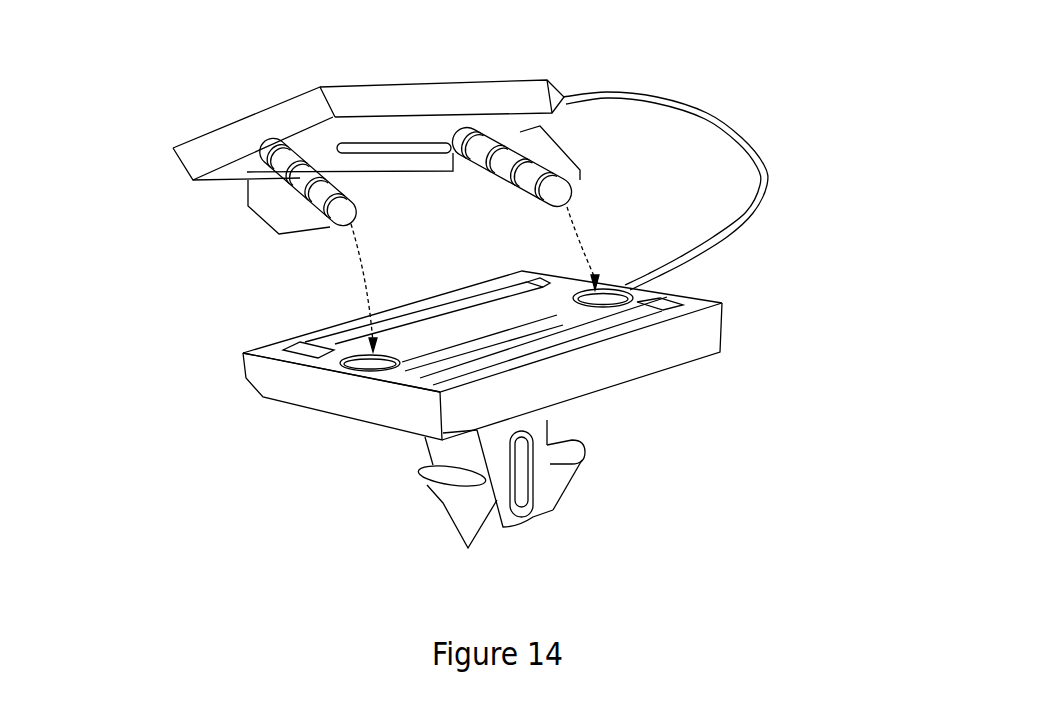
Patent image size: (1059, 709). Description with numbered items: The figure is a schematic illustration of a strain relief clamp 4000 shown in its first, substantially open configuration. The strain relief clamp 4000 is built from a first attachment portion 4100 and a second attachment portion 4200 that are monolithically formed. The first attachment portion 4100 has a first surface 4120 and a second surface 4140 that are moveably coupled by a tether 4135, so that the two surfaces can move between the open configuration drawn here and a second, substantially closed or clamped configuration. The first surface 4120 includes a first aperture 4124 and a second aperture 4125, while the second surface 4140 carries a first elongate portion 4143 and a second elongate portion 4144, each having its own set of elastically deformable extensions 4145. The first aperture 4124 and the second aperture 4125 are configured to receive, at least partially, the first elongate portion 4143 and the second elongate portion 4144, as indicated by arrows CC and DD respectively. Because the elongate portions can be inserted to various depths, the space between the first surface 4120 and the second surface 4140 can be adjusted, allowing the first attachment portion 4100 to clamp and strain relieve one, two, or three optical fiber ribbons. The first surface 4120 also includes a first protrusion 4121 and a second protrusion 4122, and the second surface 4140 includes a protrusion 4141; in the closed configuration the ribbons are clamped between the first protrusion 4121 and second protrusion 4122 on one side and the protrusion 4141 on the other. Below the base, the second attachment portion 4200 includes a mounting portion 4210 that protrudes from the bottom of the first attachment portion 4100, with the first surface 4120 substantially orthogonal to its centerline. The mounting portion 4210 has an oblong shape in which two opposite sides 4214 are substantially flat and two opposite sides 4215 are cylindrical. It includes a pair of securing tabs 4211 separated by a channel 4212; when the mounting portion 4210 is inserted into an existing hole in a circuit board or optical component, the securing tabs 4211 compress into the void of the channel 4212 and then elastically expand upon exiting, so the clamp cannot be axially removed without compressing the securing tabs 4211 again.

The strain relief clamp 4000 is at (388, 58).
The first attachment portion 4100 is at (225, 382).
The first surface 4120 is at (527, 318).
The first protrusion 4121 is at (423, 388).
The second protrusion 4122 is at (333, 348).
The first aperture 4124 is at (358, 370).
The second aperture 4125 is at (620, 308).
The tether 4135 is at (770, 153).
The second surface 4140 is at (337, 115).
The protrusion 4141 is at (337, 145).
The first elongate portion 4143 is at (278, 233).
The second elongate portion 4144 is at (562, 190).
The elastically deformable extensions 4145 is at (247, 217).
The second attachment portion 4200 is at (600, 464).
The mounting portion 4210 is at (417, 473).
The securing tabs 4211 is at (550, 470).
The channel 4212 is at (523, 485).
The flat sides 4214 is at (500, 487).
The cylindrical sides 4215 is at (470, 455).
The arrow CC is at (364, 262).
The arrow DD is at (598, 248).